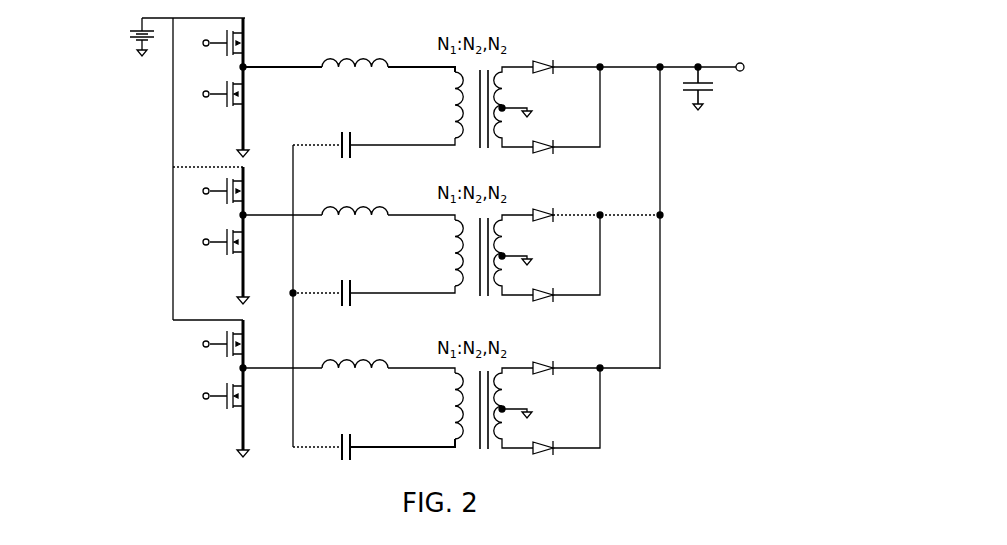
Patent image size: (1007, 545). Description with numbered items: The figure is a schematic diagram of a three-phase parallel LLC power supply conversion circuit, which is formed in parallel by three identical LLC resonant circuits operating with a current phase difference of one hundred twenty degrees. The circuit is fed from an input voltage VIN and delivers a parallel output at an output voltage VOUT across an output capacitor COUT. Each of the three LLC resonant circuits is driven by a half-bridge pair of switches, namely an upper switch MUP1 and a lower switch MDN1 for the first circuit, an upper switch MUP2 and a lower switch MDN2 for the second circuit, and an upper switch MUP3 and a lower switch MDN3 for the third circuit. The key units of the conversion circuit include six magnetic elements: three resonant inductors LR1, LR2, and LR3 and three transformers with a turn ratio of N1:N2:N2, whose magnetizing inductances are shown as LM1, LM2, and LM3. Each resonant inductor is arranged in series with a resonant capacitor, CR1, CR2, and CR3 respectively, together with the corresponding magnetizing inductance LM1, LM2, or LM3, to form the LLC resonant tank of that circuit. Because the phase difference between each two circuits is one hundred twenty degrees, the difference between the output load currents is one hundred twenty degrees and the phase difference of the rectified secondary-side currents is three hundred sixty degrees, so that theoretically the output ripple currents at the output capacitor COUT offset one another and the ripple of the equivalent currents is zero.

The input voltage source VIN is at (121, 37).
The upper switch of first stage MUP1 is at (246, 43).
The lower switch of first stage MDN1 is at (247, 94).
The resonant inductor LR1 is at (355, 50).
The resonant capacitor of first stage CR1 is at (325, 132).
The magnetizing inductance of first transformer LM1 is at (433, 105).
The upper switch of second stage MUP2 is at (246, 191).
The lower switch of second stage MDN2 is at (247, 242).
The resonant inductor LR2 is at (355, 199).
The resonant capacitor of second stage CR2 is at (325, 281).
The magnetizing inductance of second transformer LM2 is at (433, 253).
The upper switch of third stage MUP3 is at (246, 344).
The lower switch of third stage MDN3 is at (247, 396).
The resonant inductor LR3 is at (355, 352).
The resonant capacitor of third stage CR3 is at (325, 434).
The magnetizing inductance of third transformer LM3 is at (433, 406).
The output voltage VOUT is at (750, 55).
The output capacitor COUT is at (720, 91).